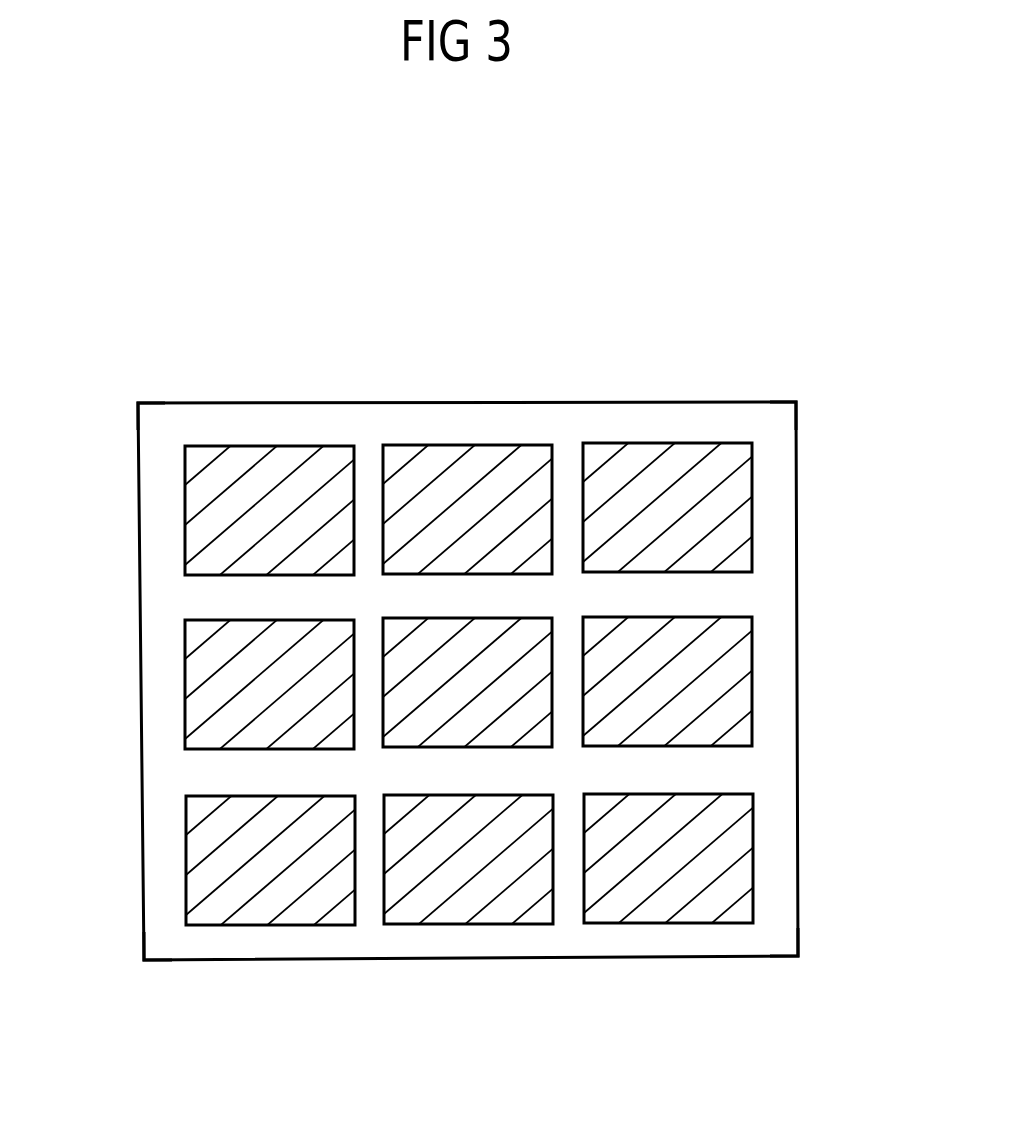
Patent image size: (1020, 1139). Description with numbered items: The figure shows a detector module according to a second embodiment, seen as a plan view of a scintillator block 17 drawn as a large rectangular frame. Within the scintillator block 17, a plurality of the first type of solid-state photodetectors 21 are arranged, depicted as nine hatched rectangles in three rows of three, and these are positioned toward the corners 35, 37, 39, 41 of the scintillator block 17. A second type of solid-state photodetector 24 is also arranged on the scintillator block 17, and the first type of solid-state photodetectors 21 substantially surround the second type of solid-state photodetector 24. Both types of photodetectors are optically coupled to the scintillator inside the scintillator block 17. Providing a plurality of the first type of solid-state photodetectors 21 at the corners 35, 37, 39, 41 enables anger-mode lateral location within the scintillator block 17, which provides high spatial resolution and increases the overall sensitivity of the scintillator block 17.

The scintillator block 17 is at (628, 402).
The first type of solid-state photodetector 21 is at (498, 445).
The second type of solid-state photodetector 24 is at (390, 749).
The corner 35 is at (157, 423).
The corner 37 is at (172, 938).
The corner 39 is at (777, 932).
The corner 41 is at (773, 420).